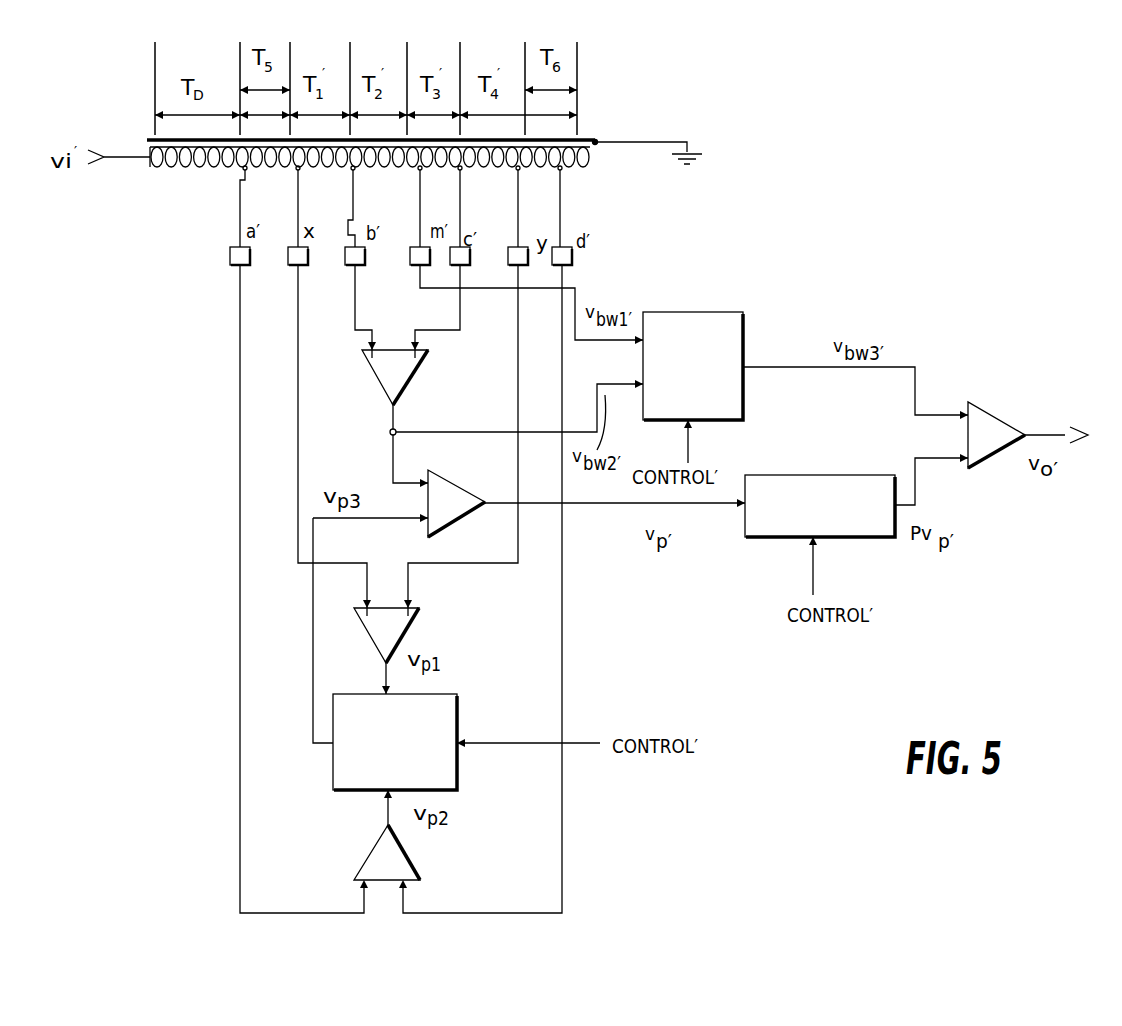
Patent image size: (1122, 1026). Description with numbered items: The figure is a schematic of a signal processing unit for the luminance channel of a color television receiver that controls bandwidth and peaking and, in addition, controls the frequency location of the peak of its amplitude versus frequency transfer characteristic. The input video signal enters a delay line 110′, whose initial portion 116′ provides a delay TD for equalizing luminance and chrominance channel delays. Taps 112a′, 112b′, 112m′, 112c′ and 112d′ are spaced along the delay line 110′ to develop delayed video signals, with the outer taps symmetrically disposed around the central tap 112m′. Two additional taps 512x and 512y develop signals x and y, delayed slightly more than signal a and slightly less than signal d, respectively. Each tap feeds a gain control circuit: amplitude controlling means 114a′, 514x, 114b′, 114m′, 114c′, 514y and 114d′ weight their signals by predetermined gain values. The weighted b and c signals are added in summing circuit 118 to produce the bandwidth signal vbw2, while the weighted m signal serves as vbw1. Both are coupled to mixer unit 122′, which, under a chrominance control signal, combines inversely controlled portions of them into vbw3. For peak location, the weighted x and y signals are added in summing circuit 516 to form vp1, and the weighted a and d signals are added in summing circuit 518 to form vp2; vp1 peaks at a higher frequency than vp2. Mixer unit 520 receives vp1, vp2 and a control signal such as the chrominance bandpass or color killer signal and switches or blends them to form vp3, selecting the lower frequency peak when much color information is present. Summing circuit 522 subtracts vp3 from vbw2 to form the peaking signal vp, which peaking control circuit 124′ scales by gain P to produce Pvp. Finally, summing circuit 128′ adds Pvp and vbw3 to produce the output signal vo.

The delay line 110′ is at (424, 176).
The portion of delay line 116′ is at (121, 183).
The tap 112a′ is at (265, 206).
The tap 512x is at (300, 172).
The tap 112b′ is at (376, 206).
The tap 112m′ is at (440, 206).
The tap 112c′ is at (482, 206).
The tap 512y is at (519, 172).
The tap 112d′ is at (597, 206).
The amplitude controlling means 114a′ is at (299, 580).
The amplitude controlling means 514x is at (300, 268).
The amplitude controlling means 114b′ is at (375, 302).
The amplitude controlling means 114m′ is at (526, 313).
The amplitude controlling means 114c′ is at (464, 302).
The amplitude controlling means 514y is at (519, 268).
The amplitude controlling means 114d′ is at (520, 580).
The summing circuit 118 is at (406, 392).
The summing circuit 522 is at (436, 474).
The summing circuit 516 is at (426, 618).
The mixer unit 520 is at (458, 694).
The summing circuit 518 is at (414, 866).
The mixer unit 122′ is at (805, 384).
The peaking control circuit 124′ is at (856, 519).
The summing circuit 128′ is at (1028, 423).